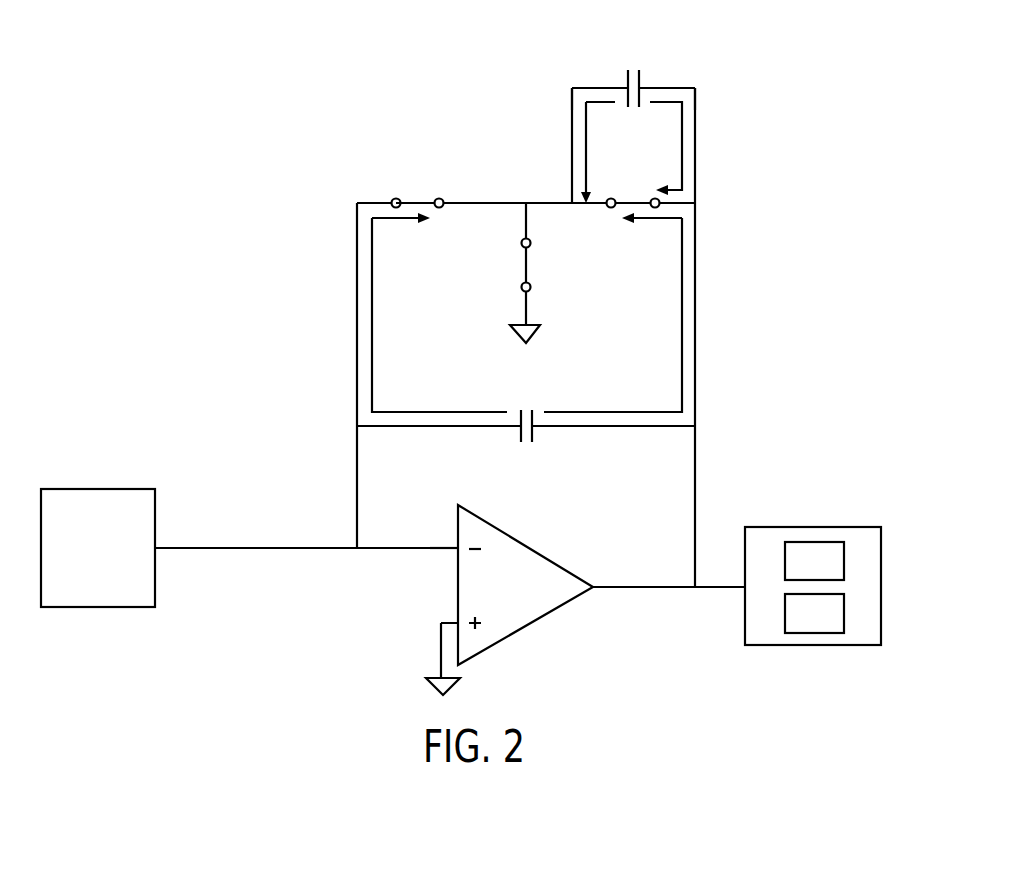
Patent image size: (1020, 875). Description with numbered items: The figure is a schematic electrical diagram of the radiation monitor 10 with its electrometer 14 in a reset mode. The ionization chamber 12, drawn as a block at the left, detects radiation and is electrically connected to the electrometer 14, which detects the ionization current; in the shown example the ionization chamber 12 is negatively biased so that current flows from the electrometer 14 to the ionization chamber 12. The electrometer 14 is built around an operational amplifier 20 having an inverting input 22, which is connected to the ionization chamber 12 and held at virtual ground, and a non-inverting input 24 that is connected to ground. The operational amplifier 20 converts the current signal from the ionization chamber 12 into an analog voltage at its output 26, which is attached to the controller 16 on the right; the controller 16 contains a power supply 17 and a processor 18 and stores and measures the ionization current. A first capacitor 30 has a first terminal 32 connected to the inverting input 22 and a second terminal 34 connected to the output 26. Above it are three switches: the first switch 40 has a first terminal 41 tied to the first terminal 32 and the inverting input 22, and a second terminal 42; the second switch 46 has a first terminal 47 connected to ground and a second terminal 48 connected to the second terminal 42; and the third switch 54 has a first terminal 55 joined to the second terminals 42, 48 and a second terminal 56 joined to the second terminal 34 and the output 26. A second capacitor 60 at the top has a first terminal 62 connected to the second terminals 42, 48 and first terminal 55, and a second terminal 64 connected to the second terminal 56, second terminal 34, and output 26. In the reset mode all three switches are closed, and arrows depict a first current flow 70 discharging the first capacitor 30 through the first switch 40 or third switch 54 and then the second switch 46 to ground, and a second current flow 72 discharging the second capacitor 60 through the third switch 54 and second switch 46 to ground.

The radiation monitor 10 is at (192, 70).
The ionization chamber 12 is at (97, 489).
The electrometer 14 is at (462, 104).
The controller 16 is at (818, 527).
The power supply 17 is at (844, 560).
The processor 18 is at (844, 612).
The operational amplifier 20 is at (530, 545).
The inverting input 22 is at (452, 548).
The non-inverting input 24 is at (452, 623).
The output 26 is at (710, 592).
The first capacitor 30 is at (534, 435).
The first terminal 32 is at (488, 428).
The second terminal 34 is at (583, 428).
The first switch 40 is at (420, 203).
The first terminal 41 is at (375, 203).
The second terminal 42 is at (480, 203).
The second switch 46 is at (528, 262).
The first terminal 47 is at (528, 308).
The second terminal 48 is at (528, 218).
The third switch 54 is at (637, 201).
The first terminal 55 is at (594, 208).
The second terminal 56 is at (688, 207).
The second capacitor 60 is at (643, 72).
The first terminal 62 is at (595, 88).
The second terminal 64 is at (686, 88).
The first current flow 70 is at (372, 337).
The second current flow 72 is at (579, 137).